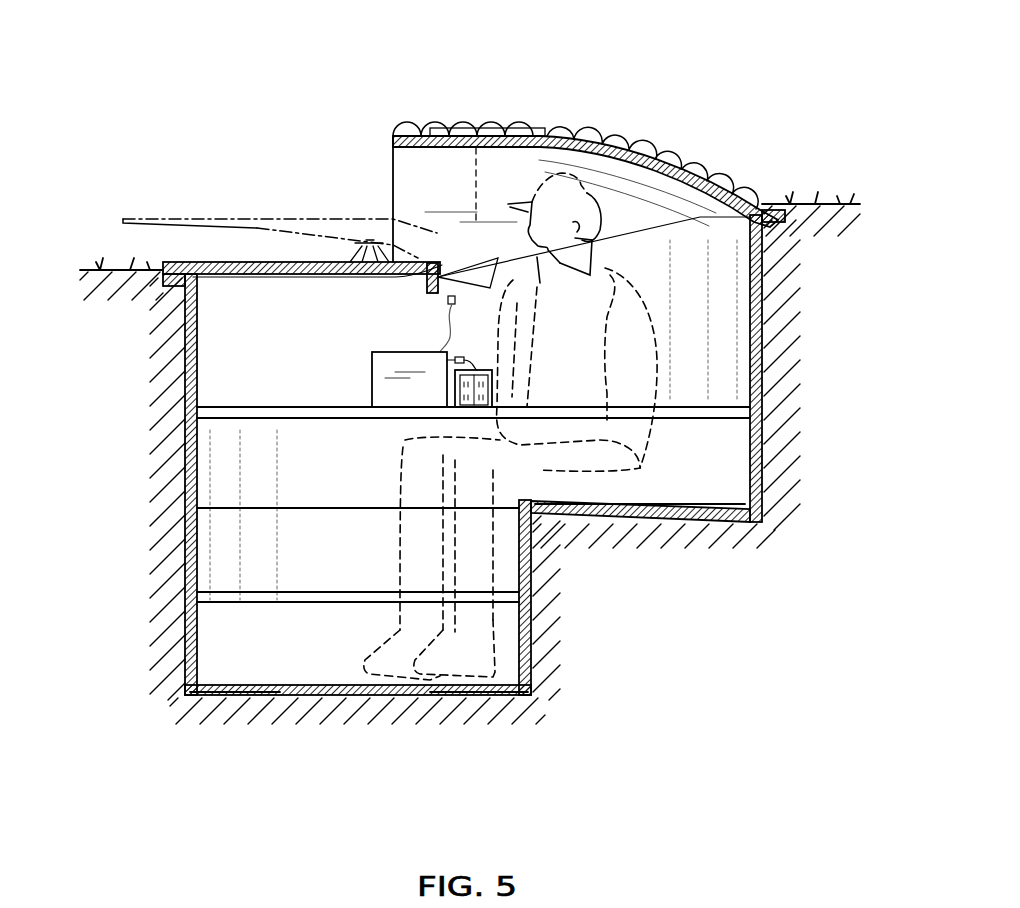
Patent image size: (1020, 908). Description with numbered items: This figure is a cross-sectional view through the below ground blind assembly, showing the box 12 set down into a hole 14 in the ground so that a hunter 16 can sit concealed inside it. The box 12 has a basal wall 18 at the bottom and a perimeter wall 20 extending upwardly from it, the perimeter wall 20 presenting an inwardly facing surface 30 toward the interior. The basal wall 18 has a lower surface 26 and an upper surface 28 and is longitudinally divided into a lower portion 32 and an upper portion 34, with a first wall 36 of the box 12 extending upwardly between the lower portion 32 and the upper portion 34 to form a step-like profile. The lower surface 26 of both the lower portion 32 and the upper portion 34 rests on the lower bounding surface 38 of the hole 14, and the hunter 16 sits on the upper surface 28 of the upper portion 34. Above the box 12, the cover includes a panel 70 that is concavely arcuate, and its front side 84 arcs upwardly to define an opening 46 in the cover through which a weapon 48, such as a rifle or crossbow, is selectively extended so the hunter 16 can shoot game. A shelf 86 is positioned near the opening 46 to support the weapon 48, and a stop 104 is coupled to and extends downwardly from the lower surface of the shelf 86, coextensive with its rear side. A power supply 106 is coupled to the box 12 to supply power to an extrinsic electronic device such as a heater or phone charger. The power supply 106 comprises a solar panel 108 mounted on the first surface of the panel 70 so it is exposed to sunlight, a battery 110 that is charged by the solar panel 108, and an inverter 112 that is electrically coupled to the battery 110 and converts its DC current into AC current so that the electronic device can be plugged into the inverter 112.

The box 12 is at (762, 330).
The hole 14 is at (193, 312).
The hunter 16 is at (580, 178).
The basal wall 18 is at (342, 697).
The perimeter wall 20 is at (185, 513).
The lower surface 26 is at (233, 697).
The upper surface 28 is at (217, 686).
The inwardly facing surface 30 is at (196, 467).
The lower portion 32 is at (478, 697).
The upper portion 34 is at (687, 524).
The first wall 36 is at (532, 630).
The lower bounding surface 38 is at (713, 512).
The opening 46 is at (412, 173).
The weapon 48 is at (298, 217).
The panel 70 is at (520, 137).
The front side 84 is at (390, 138).
The shelf 86 is at (215, 262).
The stop 104 is at (438, 275).
The power supply 106 is at (338, 371).
The solar panel 108 is at (448, 128).
The battery 110 is at (372, 385).
The inverter 112 is at (483, 410).